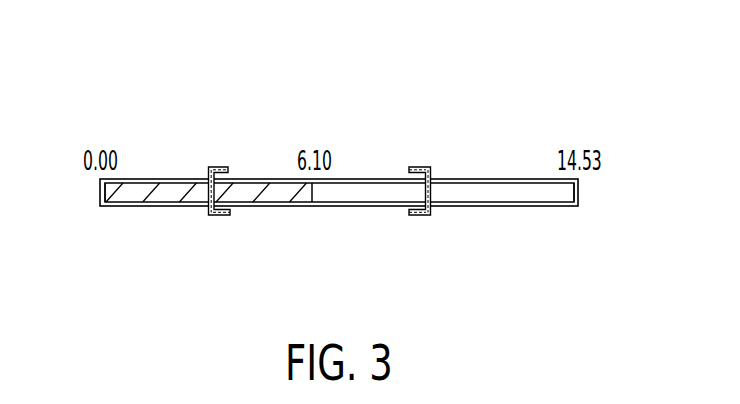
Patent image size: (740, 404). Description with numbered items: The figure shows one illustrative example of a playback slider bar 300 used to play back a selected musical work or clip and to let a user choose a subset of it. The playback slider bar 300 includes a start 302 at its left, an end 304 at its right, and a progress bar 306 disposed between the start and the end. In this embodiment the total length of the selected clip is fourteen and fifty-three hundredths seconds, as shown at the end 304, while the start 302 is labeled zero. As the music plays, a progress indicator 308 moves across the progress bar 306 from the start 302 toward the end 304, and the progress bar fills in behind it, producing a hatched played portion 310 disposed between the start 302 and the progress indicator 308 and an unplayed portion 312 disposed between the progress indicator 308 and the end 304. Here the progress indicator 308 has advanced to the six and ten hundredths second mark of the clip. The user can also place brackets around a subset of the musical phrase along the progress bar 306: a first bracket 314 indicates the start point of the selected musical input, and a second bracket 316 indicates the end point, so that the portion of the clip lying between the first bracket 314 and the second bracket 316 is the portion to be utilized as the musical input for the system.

The playback slider bar 300 is at (568, 82).
The start 302 is at (94, 216).
The end 304 is at (581, 218).
The progress bar 306 is at (266, 150).
The progress indicator 308 is at (330, 243).
The played portion 310 is at (145, 178).
The unplayed portion 312 is at (532, 178).
The first bracket 314 is at (238, 255).
The second bracket 316 is at (438, 255).